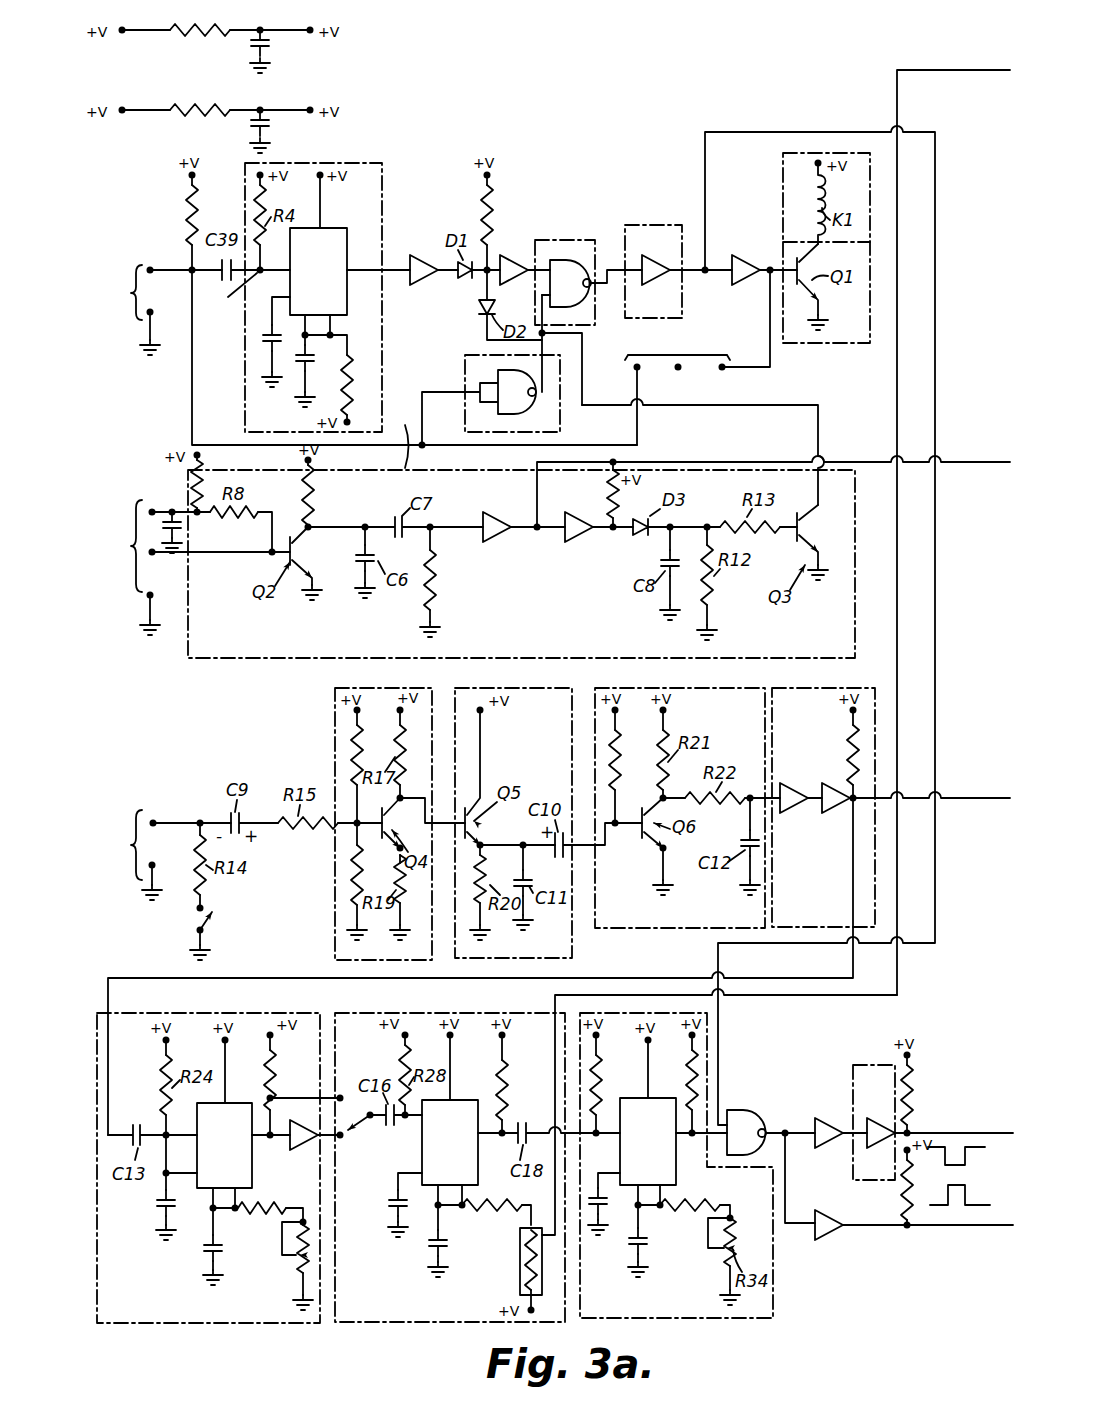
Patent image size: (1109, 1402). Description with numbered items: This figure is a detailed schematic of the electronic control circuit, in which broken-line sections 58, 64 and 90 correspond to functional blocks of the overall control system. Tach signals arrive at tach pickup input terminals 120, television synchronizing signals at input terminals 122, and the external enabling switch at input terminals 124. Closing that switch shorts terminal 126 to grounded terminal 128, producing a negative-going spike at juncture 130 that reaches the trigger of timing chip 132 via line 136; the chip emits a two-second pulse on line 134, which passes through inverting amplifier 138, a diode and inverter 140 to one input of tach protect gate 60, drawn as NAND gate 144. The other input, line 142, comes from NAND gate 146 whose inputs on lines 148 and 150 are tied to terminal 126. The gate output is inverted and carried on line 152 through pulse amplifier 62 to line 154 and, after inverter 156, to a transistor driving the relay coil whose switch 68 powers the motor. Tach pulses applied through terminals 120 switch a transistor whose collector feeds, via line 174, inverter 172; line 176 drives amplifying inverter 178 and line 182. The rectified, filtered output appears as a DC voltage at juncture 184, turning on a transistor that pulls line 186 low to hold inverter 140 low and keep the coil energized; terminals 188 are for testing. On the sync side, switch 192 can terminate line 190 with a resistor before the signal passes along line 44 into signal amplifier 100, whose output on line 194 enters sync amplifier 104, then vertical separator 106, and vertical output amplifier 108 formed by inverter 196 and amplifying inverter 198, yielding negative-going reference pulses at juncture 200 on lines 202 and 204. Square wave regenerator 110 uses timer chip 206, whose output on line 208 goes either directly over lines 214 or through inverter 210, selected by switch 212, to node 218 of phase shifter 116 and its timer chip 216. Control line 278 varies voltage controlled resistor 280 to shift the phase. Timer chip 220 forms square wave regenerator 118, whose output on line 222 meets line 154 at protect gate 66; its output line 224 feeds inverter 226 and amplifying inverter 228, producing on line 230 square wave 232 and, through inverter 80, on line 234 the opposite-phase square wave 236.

The signal line 44 is at (270, 826).
The oscillator module 58 is at (346, 165).
The tach protect gate 60 is at (550, 241).
The pulse amplifier 62 is at (641, 226).
The relay driver module 64 is at (857, 344).
The protect gate 66 is at (745, 1110).
The relay switch 68 is at (783, 170).
The inverter 80 is at (858, 1066).
The amplifier circuit 90 is at (212, 677).
The signal amplifier 100 is at (335, 940).
The sync amplifier 104 is at (572, 943).
The vertical separator 106 is at (685, 930).
The vertical output amplifier 108 is at (814, 688).
The square wave regenerator 110 is at (222, 1325).
The phase shifter 116 is at (378, 1325).
The square wave regenerator 118 is at (780, 1299).
The tach pickup input terminals 120 is at (119, 546).
The input terminals 122 is at (129, 855).
The input terminals 124 is at (119, 294).
The terminal 126 is at (165, 262).
The grounded terminal 128 is at (152, 316).
The juncture 130 is at (227, 294).
The timing chip 132 is at (318, 271).
The line 134 is at (357, 269).
The line 136 is at (268, 273).
The inverting amplifier 138 is at (425, 287).
The inverter 140 is at (518, 256).
The line 142 is at (558, 333).
The NAND gate 144 is at (600, 290).
The NAND gate 146 is at (518, 408).
The line 148 is at (447, 405).
The line 150 is at (194, 397).
The line 152 is at (703, 278).
The line 154 is at (707, 221).
The inverter 156 is at (748, 285).
The inverter 172 is at (498, 504).
The line 174 is at (457, 537).
The line 176 is at (527, 536).
The amplifying inverter 178 is at (580, 512).
The line 182 is at (845, 460).
The juncture 184 is at (710, 520).
The line 186 is at (729, 407).
The terminals 188 is at (682, 349).
The line 190 is at (170, 821).
The switch 192 is at (214, 927).
The line 194 is at (446, 820).
The inverter 196 is at (790, 782).
The amplifying inverter 198 is at (832, 813).
The juncture 200 is at (856, 796).
The line 202 is at (953, 796).
The line 204 is at (853, 894).
The timer chip 206 is at (224, 1145).
The line 208 is at (270, 1140).
The inverter 210 is at (305, 1150).
The switch 212 is at (366, 1127).
The lines 214 is at (278, 1101).
The timer chip 216 is at (450, 1142).
The trigger node 218 is at (408, 1126).
The timer chip 220 is at (648, 1141).
The line 222 is at (692, 1140).
The line 224 is at (793, 1131).
The inverter 226 is at (828, 1150).
The amplifying inverter 228 is at (836, 1221).
The output line 230 is at (935, 1230).
The square wave 232 is at (966, 1202).
The line 234 is at (942, 1130).
The square wave 236 is at (968, 1163).
The control line 278 is at (900, 987).
The voltage controlled resistor 280 is at (520, 1260).